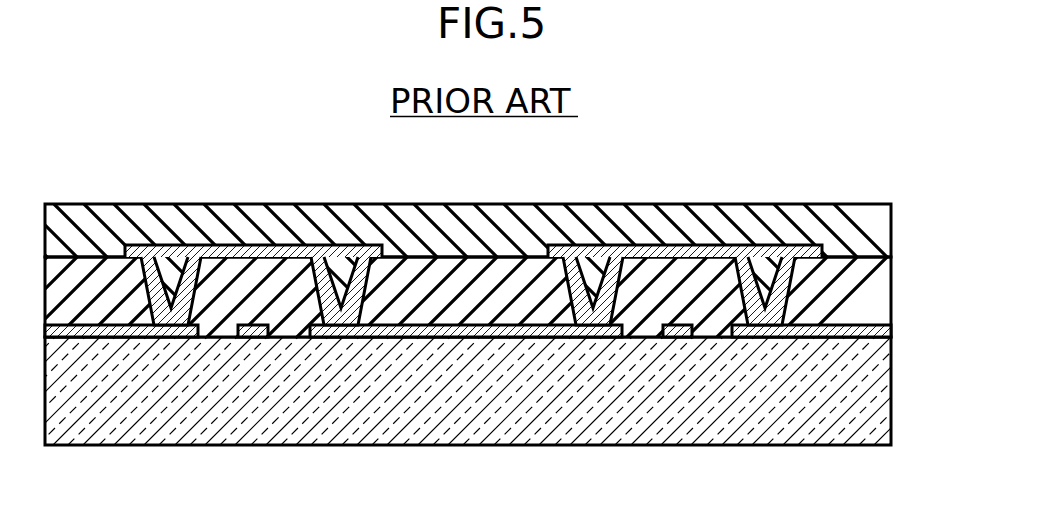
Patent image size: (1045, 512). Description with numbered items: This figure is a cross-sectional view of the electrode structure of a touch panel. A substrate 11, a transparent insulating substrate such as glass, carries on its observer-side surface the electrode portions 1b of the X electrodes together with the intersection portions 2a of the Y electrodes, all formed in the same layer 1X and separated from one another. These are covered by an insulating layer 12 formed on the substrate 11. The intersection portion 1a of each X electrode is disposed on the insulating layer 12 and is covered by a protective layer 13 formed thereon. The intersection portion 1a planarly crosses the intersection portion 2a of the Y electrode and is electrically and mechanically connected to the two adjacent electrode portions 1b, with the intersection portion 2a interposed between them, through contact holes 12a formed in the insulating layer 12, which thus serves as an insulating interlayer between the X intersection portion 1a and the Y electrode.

The substrate 11 is at (883, 372).
The insulating layer 12 is at (883, 270).
The protective layer 13 is at (881, 226).
The wiring layer 1X is at (491, 368).
The electrode portion 1b is at (135, 333).
The intersection portion 2a is at (253, 333).
The intersection portion 1a is at (257, 247).
The contact hole 12a is at (177, 287).